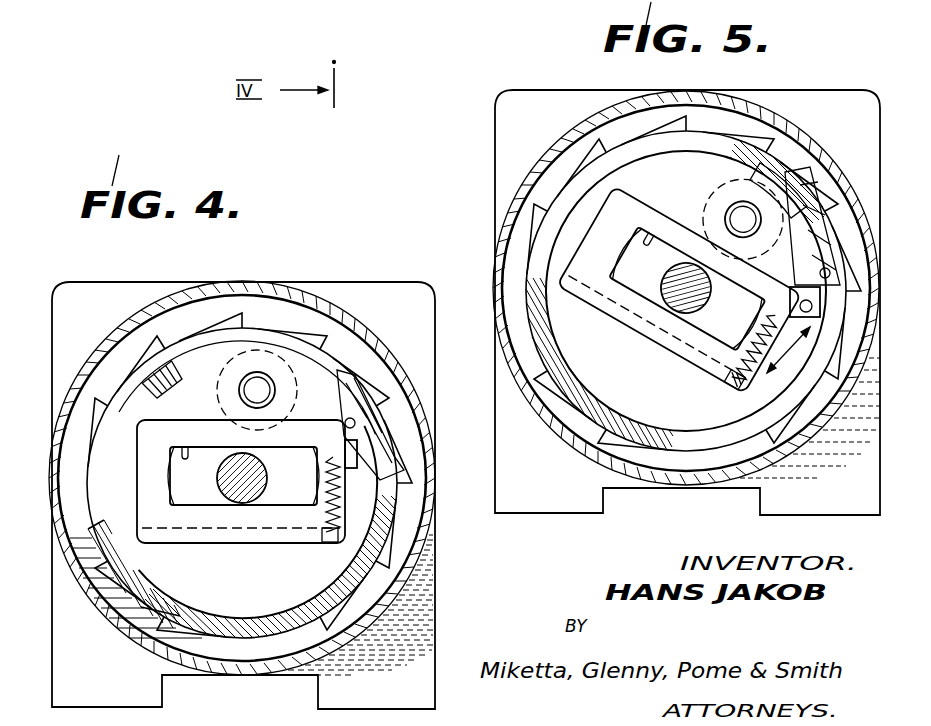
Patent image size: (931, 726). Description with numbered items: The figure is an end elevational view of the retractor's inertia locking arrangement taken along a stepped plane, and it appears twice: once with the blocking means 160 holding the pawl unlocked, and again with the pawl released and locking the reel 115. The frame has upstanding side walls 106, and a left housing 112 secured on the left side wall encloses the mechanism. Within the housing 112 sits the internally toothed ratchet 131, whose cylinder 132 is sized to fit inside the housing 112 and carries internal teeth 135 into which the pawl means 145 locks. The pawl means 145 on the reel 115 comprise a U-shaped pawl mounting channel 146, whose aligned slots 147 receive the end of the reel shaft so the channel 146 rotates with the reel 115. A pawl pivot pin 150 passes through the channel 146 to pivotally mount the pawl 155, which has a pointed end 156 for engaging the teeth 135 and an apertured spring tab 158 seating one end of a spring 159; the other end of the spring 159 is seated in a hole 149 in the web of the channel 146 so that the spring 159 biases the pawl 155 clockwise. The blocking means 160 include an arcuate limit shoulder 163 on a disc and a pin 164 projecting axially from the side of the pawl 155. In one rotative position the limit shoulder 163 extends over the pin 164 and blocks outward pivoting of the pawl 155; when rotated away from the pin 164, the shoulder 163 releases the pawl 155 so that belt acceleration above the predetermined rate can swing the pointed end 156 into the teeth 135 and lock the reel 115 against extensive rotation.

In FIG. 4, the side walls 106 is at (73, 290).
In FIG. 5, the side walls 106 is at (510, 115).
In FIG. 4, the left housing 112 is at (163, 305).
In FIG. 5, the left housing 112 is at (568, 133).
In FIG. 4, the cylinder 132 is at (212, 310).
In FIG. 5, the cylinder 132 is at (703, 120).
In FIG. 4, the internally toothed ratchet 131 is at (289, 298).
In FIG. 5, the internally toothed ratchet 131 is at (770, 105).
In FIG. 4, the pawl 155 is at (177, 363).
In FIG. 5, the pawl 155 is at (783, 197).
In FIG. 4, the aligned slots 147 is at (186, 452).
In FIG. 5, the aligned slots 147 is at (620, 252).
In FIG. 4, the pawl pivot pin 150 is at (260, 387).
In FIG. 5, the pawl pivot pin 150 is at (738, 222).
In FIG. 4, the pin 164 is at (330, 395).
In FIG. 5, the pin 164 is at (825, 275).
In FIG. 4, the pointed end 156 is at (355, 425).
In FIG. 5, the pointed end 156 is at (808, 372).
In FIG. 4, the apertured spring tab 158 is at (352, 444).
In FIG. 5, the apertured spring tab 158 is at (812, 365).
In FIG. 4, the reel 115 is at (230, 505).
In FIG. 5, the reel 115 is at (650, 300).
In FIG. 4, the pawl mounting channel 146 is at (232, 540).
In FIG. 5, the pawl mounting channel 146 is at (657, 340).
In FIG. 4, the spring 159 is at (330, 530).
In FIG. 5, the spring 159 is at (752, 400).
In FIG. 4, the limit shoulder 163 is at (353, 552).
In FIG. 5, the limit shoulder 163 is at (657, 423).
In FIG. 4, the blocking means 160 is at (365, 578).
In FIG. 4, the pawl means 145 is at (170, 540).
In FIG. 5, the pawl means 145 is at (590, 232).
In FIG. 4, the internal teeth 135 is at (158, 605).
In FIG. 5, the hole 149 is at (727, 375).